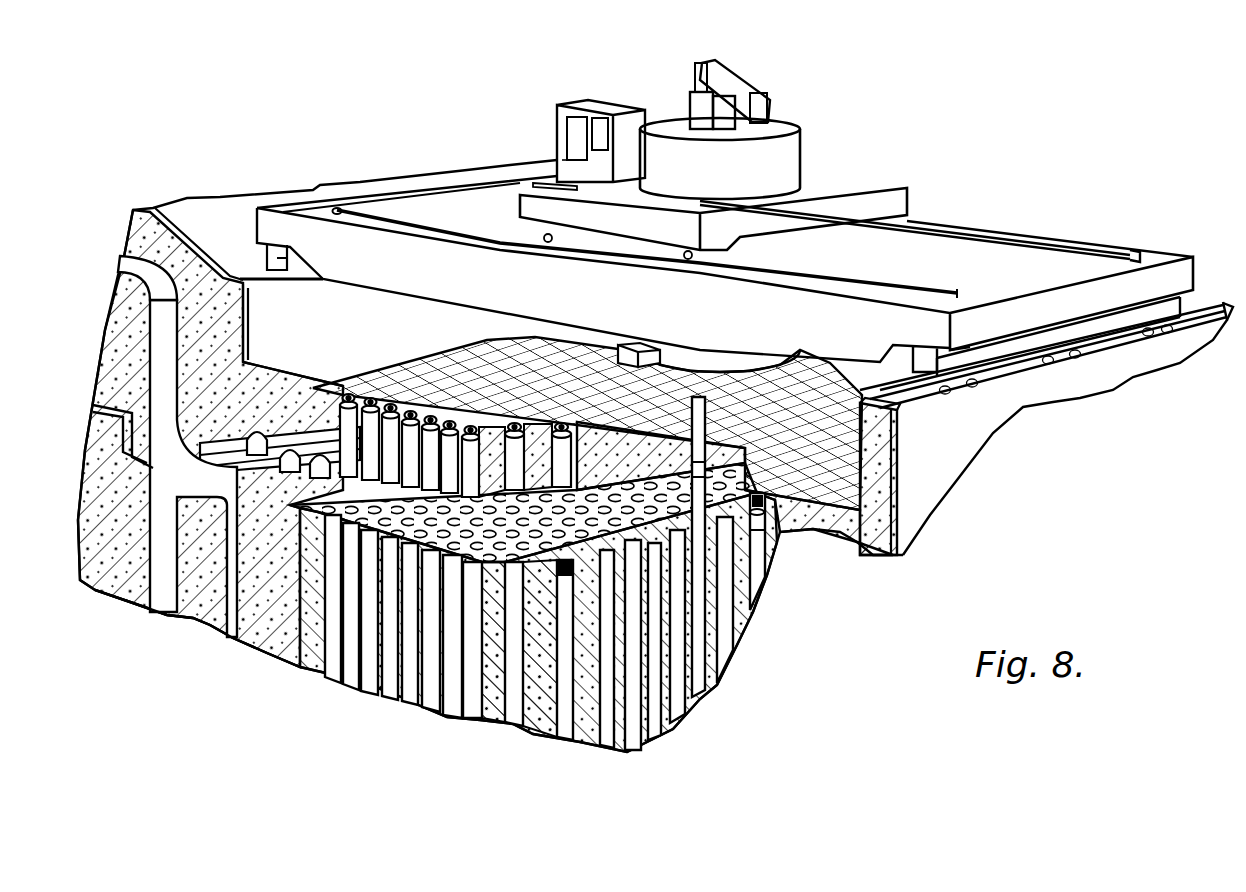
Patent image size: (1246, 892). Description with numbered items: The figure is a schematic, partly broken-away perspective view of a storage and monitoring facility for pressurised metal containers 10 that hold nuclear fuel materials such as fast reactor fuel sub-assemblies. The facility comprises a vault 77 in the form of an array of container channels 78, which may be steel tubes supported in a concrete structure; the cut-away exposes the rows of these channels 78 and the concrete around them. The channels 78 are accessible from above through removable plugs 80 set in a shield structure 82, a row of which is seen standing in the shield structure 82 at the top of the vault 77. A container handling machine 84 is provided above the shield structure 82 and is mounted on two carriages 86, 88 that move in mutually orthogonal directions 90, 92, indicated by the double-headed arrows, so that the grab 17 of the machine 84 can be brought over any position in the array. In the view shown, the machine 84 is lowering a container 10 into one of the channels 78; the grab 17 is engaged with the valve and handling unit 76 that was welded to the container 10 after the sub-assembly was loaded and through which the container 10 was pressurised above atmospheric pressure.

The metal container 10 is at (697, 620).
The grab 17 is at (887, 463).
The valve and handling unit 76 is at (555, 566).
The vault 77 is at (806, 579).
The container channels 78 is at (473, 700).
The removable plugs 80 is at (372, 402).
The shield structure 82 is at (288, 395).
The container handling machine 84 is at (783, 106).
The carriage 86 is at (880, 205).
The carriage 88 is at (1023, 305).
The direction of movement 90 is at (627, 217).
The direction of movement 92 is at (1050, 302).